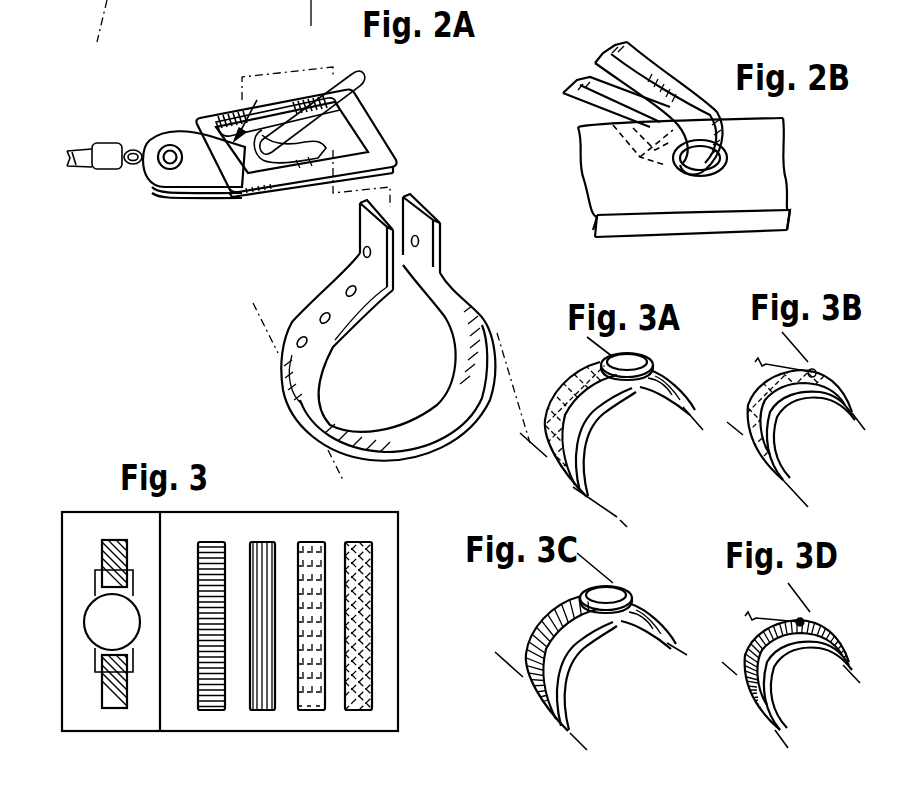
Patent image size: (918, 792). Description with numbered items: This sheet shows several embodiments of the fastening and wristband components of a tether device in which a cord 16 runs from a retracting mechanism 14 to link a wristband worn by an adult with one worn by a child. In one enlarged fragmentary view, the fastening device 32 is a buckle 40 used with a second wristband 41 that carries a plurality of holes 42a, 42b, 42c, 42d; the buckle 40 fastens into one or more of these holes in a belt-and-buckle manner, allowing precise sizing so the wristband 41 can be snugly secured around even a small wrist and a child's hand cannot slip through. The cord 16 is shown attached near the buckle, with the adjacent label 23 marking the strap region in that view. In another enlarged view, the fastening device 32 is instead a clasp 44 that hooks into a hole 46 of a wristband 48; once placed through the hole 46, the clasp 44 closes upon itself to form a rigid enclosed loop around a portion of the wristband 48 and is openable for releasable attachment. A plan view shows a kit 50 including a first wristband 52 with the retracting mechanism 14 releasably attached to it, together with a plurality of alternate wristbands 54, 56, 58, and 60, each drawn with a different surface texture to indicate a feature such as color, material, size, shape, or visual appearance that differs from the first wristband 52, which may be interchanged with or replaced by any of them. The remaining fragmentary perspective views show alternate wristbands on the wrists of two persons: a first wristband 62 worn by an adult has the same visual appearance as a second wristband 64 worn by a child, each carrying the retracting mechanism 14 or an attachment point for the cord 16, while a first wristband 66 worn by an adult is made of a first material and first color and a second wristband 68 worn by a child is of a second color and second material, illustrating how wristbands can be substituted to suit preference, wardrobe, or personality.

In FIG. 3, the retracting mechanism 14 is at (95, 627).
In FIG. 3A, the retracting mechanism 14 is at (650, 354).
In FIG. 3C, the retracting mechanism 14 is at (617, 592).
In FIG. 2A, the cord 16 is at (88, 172).
In FIG. 3B, the cord 16 is at (775, 362).
In FIG. 3D, the cord 16 is at (763, 618).
In FIG. 2B, the strap 23 is at (670, 9).
In FIG. 2A, the fastening device 32 is at (396, 128).
In FIG. 2B, the fastening device 32 is at (697, 72).
In FIG. 2A, the buckle 40 is at (360, 118).
In FIG. 2A, the second wristband 41 is at (422, 417).
In FIG. 2A, the hole 42a is at (363, 253).
In FIG. 2A, the hole 42b is at (347, 290).
In FIG. 2A, the hole 42c is at (320, 318).
In FIG. 2A, the hole 42d is at (298, 343).
In FIG. 2B, the clasp 44 is at (653, 60).
In FIG. 2B, the hole 46 is at (727, 160).
In FIG. 2B, the wristband 48 is at (792, 180).
In FIG. 3, the kit 50 is at (86, 499).
In FIG. 3, the first wristband 52 is at (114, 708).
In FIG. 3, the alternate wristband 54 is at (206, 710).
In FIG. 3, the alternate wristband 56 is at (264, 710).
In FIG. 3, the alternate wristband 58 is at (312, 710).
In FIG. 3, the alternate wristband 60 is at (358, 710).
In FIG. 3A, the first wristband 62 is at (683, 392).
In FIG. 3B, the second wristband 64 is at (830, 382).
In FIG. 3C, the first wristband 66 is at (538, 707).
In FIG. 3D, the second wristband 68 is at (832, 637).